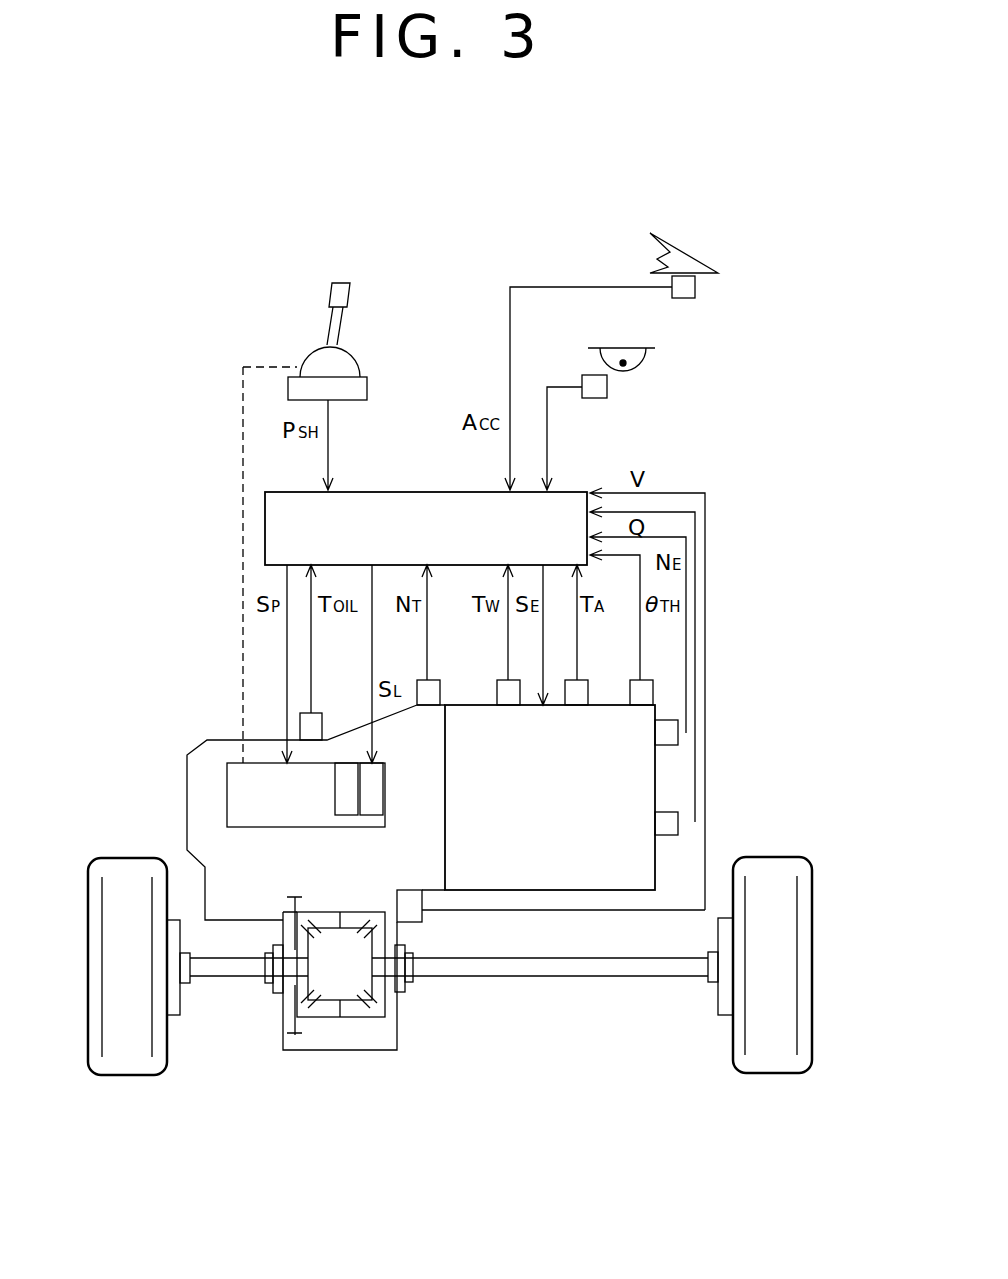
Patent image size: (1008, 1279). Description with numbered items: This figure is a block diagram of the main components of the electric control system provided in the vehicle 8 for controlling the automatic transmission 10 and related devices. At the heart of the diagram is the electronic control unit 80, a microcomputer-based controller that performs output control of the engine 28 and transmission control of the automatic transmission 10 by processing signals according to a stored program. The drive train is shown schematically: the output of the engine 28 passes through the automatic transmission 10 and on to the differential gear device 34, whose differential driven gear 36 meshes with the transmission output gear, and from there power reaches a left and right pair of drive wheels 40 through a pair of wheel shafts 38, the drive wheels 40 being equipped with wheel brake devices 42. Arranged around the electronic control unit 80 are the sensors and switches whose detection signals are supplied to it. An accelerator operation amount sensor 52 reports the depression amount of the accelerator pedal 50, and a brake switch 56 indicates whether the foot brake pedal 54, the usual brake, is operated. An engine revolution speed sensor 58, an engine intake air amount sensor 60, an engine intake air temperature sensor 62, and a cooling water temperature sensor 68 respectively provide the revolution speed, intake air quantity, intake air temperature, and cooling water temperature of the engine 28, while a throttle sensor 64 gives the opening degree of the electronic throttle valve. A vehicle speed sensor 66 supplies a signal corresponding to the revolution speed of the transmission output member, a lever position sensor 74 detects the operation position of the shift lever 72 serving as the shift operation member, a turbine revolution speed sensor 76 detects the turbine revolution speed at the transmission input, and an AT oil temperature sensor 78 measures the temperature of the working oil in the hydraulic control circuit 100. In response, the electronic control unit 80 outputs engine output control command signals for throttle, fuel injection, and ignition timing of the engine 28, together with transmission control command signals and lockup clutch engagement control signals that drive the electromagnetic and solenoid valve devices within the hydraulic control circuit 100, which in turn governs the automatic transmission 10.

The vehicle 8 is at (727, 109).
The automatic transmission 10 is at (192, 813).
The engine 28 is at (470, 722).
The differential gear device 34 is at (375, 1025).
The differential driven gear 36 is at (300, 1037).
The wheel shafts 38 is at (230, 968).
The drive wheels 40 is at (128, 1067).
The wheel brake devices 42 is at (175, 1017).
The accelerator pedal 50 is at (685, 250).
The accelerator operation amount sensor 52 is at (684, 298).
The foot brake pedal 54 is at (630, 376).
The brake switch 56 is at (593, 398).
The engine revolution speed sensor 58 is at (668, 745).
The engine intake air amount sensor 60 is at (668, 835).
The engine intake air temperature sensor 62 is at (588, 683).
The throttle sensor 64 is at (652, 683).
The vehicle speed sensor 66 is at (422, 922).
The cooling water temperature sensor 68 is at (499, 683).
The shift lever 72 is at (342, 327).
The lever position sensor 74 is at (368, 390).
The turbine revolution speed sensor 76 is at (419, 682).
The AT oil temperature sensor 78 is at (322, 712).
The electronic control unit 80 is at (398, 494).
The hydraulic control circuit 100 is at (233, 777).